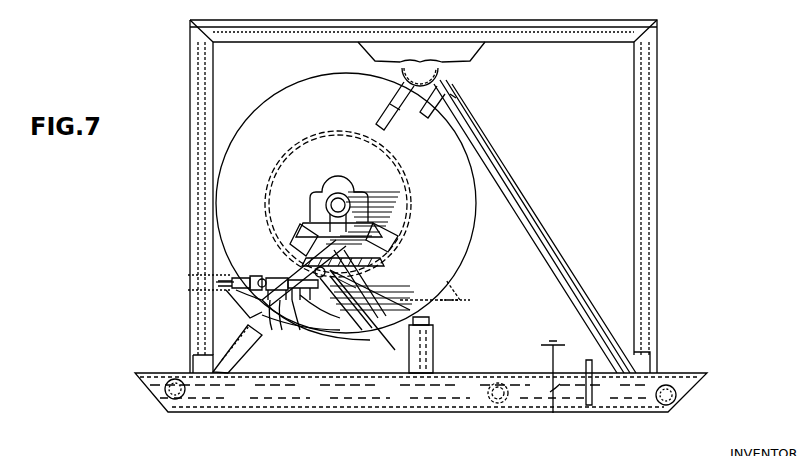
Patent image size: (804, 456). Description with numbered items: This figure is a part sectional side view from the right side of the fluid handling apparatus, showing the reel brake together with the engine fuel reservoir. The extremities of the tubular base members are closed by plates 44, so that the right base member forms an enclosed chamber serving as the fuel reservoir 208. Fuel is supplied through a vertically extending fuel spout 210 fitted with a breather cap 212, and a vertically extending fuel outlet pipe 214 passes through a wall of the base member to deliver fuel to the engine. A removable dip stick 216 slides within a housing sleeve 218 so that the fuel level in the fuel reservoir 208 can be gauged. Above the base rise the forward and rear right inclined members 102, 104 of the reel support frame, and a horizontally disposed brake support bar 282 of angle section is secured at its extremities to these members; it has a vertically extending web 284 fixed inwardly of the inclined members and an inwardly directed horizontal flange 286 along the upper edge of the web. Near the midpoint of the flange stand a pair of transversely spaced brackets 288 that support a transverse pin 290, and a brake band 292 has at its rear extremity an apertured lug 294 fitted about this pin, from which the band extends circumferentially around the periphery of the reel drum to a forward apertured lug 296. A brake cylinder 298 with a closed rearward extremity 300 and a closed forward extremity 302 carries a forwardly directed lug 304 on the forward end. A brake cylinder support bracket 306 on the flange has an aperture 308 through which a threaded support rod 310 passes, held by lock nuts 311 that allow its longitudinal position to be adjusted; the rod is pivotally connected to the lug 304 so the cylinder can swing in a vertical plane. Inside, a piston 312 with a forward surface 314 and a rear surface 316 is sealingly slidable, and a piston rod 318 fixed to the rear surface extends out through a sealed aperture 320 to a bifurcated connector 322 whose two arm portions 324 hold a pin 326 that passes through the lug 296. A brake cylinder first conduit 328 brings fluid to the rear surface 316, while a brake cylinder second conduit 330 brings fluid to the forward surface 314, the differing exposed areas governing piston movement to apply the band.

The plates 44 is at (160, 392).
The forward right inclined member 102 is at (228, 325).
The rear right inclined member 104 is at (455, 362).
The fuel reservoir 208 is at (372, 398).
The fuel spout 210 is at (418, 355).
The breather cap 212 is at (430, 320).
The fuel outlet pipe 214 is at (589, 392).
The dip stick 216 is at (552, 395).
The housing sleeve 218 is at (552, 352).
The brake support bar 282 is at (445, 310).
The vertically extending web 284 is at (330, 280).
The horizontal flange 286 is at (396, 295).
The brackets 288 is at (345, 280).
The pin 290 is at (348, 283).
The brake band 292 is at (395, 275).
The apertured lug 294 is at (344, 274).
The apertured lug 296 is at (356, 230).
The brake cylinder 298 is at (268, 318).
The rearward extremity 300 is at (348, 210).
The forward extremity 302 is at (256, 276).
The lug 304 is at (240, 278).
The brake cylinder support bracket 306 is at (238, 291).
The aperture 308 is at (230, 282).
The support rod 310 is at (248, 312).
The lock nuts 311 is at (240, 282).
The piston 312 is at (272, 330).
The forward surface 314 is at (262, 279).
The rear surface 316 is at (276, 278).
The piston rod 318 is at (308, 296).
The aperture 320 is at (288, 278).
The bifurcated connector 322 is at (312, 302).
The arm portions 324 is at (352, 255).
The pin 326 is at (350, 290).
The brake cylinder first conduit 328 is at (316, 318).
The brake cylinder second conduit 330 is at (298, 330).